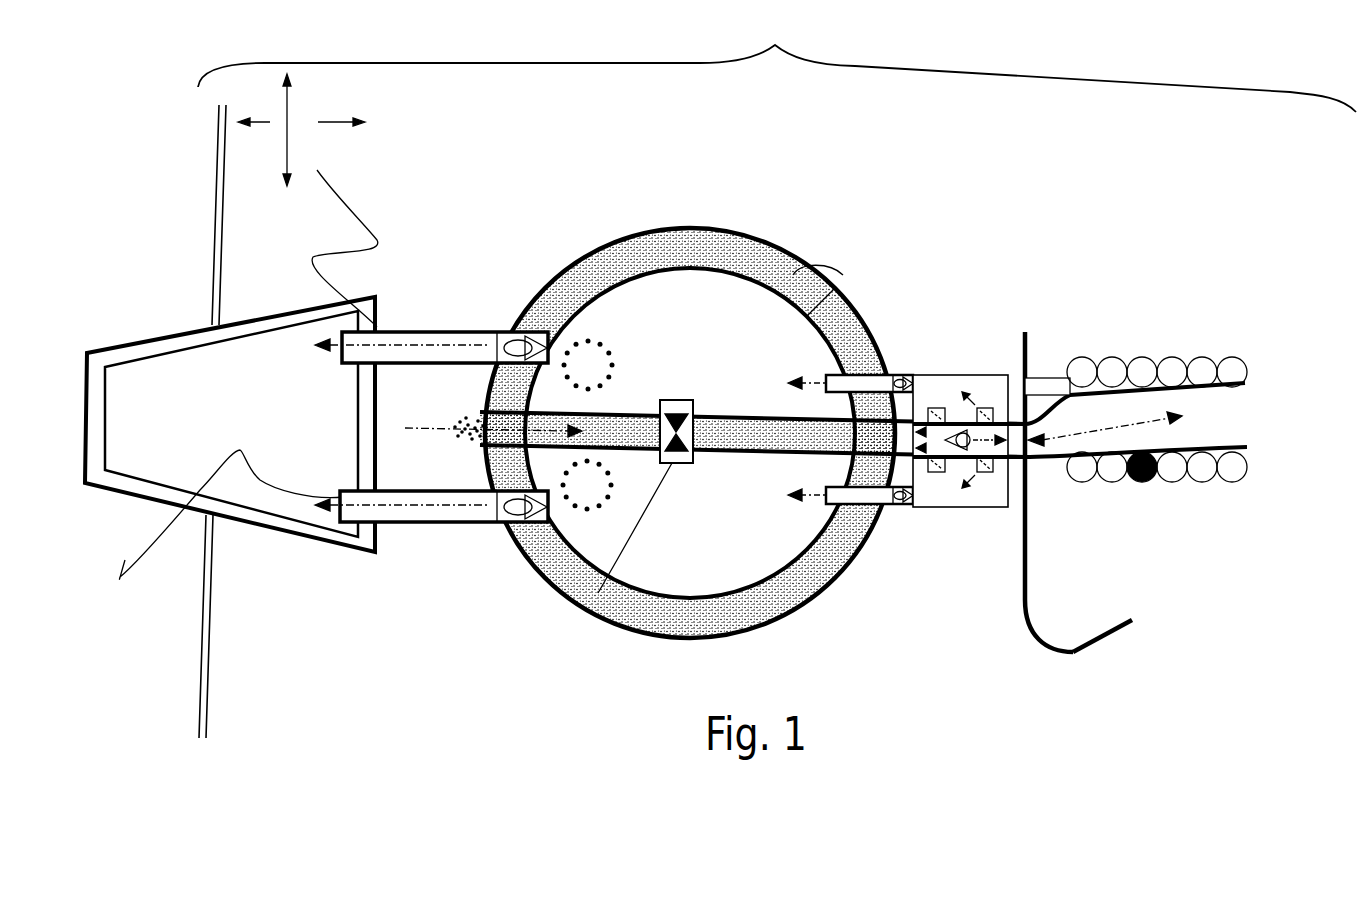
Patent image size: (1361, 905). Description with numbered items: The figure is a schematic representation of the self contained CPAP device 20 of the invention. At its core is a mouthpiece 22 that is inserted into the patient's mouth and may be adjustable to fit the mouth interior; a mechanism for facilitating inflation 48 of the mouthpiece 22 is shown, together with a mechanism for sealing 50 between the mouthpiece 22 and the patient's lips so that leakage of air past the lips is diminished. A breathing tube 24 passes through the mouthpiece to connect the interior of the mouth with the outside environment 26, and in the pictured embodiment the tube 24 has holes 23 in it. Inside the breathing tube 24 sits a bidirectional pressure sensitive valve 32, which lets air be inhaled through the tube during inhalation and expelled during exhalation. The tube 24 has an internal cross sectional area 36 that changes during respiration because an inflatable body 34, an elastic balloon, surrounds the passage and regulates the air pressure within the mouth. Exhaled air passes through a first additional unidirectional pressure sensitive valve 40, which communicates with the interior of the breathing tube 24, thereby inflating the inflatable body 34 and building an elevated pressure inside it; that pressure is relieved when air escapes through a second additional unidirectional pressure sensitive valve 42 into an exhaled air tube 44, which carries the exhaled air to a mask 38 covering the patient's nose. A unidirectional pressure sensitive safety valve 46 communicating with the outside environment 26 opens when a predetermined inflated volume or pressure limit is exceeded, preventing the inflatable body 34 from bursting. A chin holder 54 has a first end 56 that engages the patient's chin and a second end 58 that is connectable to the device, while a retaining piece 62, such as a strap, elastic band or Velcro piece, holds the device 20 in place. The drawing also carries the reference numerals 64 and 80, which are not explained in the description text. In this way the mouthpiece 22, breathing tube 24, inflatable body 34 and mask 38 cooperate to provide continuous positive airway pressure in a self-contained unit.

The self contained CPAP device 20 is at (775, 45).
The mouthpiece 22 is at (1192, 400).
The holes 23 is at (657, 457).
The breathing tube 24 is at (780, 428).
The outside environment 26 is at (301, 130).
The bidirectional pressure sensitive valve 32 is at (979, 415).
The inflatable body 34 is at (775, 355).
The internal cross sectional area 36 is at (631, 582).
The mask 38 is at (160, 337).
The first additional unidirectional pressure sensitive valve 40 is at (897, 377).
The second additional unidirectional pressure sensitive valve 42 is at (490, 330).
The exhaled air tube 44 is at (357, 372).
The unidirectional pressure sensitive safety valve 46 is at (588, 360).
The mechanism for facilitating inflation 48 is at (1057, 380).
The mechanism for sealing 50 is at (1138, 496).
The chin holder 54 is at (1050, 650).
The first end 56 is at (1133, 623).
The second end 58 is at (977, 507).
The retaining piece 62 is at (210, 230).
The spray outlet 64 is at (460, 443).
The drive roller 80 is at (1150, 478).